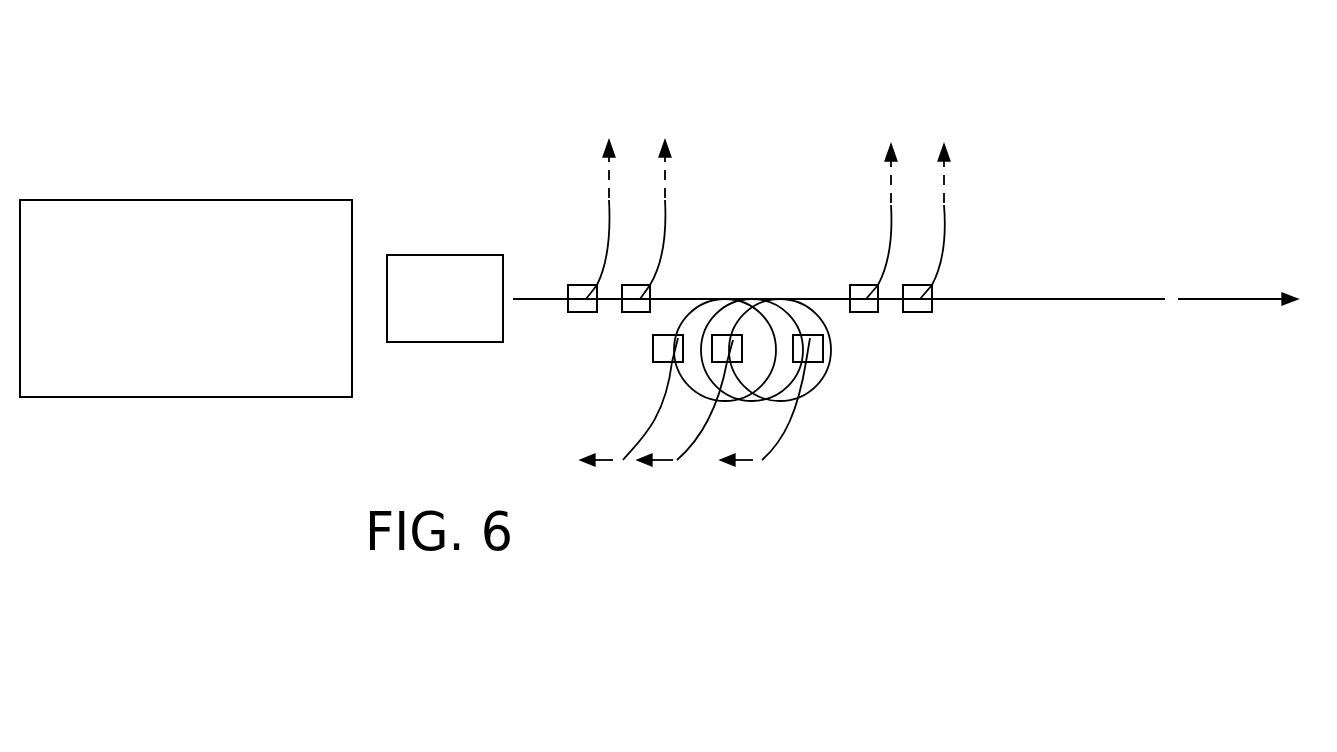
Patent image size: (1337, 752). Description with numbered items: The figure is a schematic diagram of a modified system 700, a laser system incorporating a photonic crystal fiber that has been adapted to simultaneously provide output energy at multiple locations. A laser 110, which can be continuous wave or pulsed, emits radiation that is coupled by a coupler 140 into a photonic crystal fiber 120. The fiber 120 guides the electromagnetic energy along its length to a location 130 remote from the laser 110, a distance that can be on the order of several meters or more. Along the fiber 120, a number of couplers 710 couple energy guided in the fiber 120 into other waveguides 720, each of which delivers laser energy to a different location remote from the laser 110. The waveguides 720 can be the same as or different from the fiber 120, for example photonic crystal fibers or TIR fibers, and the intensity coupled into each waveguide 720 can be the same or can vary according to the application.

The modified system 700 is at (330, 103).
The laser 110 is at (263, 279).
The coupler 140 is at (474, 306).
The photonic crystal fiber 120 is at (1047, 298).
The location remote from the laser 130 is at (1225, 299).
The couplers 710 is at (630, 313).
The waveguides 720 is at (610, 230).